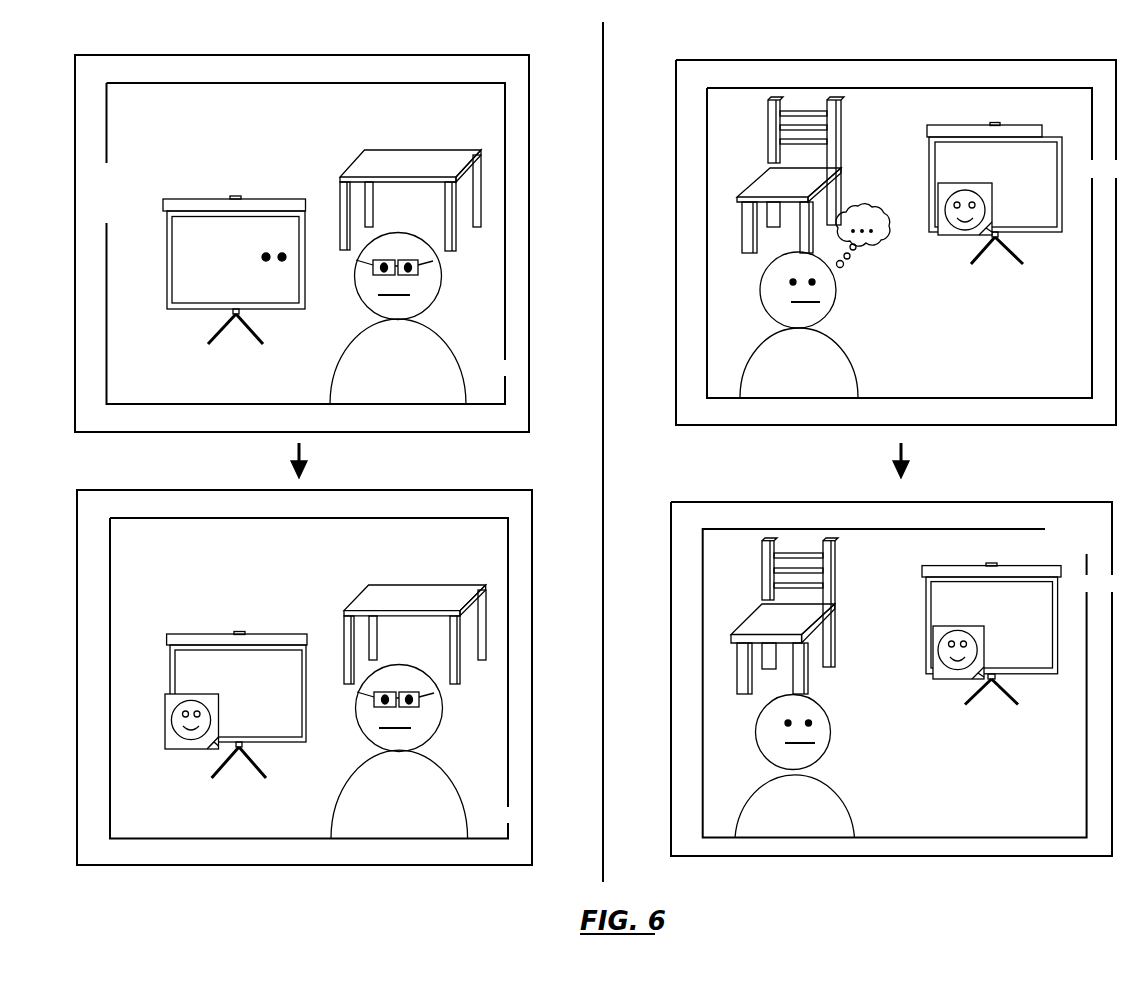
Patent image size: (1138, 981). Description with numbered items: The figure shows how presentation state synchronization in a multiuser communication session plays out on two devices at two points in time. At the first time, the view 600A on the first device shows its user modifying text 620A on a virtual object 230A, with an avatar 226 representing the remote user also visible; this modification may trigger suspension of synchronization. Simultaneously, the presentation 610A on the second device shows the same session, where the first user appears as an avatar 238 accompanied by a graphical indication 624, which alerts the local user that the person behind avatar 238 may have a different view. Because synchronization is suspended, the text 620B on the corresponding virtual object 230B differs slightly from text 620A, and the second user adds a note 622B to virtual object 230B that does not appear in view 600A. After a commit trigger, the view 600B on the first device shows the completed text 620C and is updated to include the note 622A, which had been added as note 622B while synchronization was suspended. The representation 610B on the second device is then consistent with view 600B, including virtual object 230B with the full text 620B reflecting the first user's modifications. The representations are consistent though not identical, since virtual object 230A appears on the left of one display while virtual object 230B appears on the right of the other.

The view of the multiuser communication session at a first time 600A is at (302, 54).
The view of the multiuser communication session at a second time 600B is at (305, 488).
The presentation of the multiuser communication session at a first time 610A is at (897, 59).
The representation of the multiuser communication session at a second time 610B is at (892, 501).
The virtual object 230A is at (178, 198).
The virtual object 230B is at (1045, 193).
The text 620A is at (180, 239).
The text 620B is at (1002, 153).
The completed text 620C is at (242, 667).
The note 622A is at (172, 753).
The note 622B is at (955, 237).
The avatar 226 is at (410, 338).
The avatar 238 is at (828, 378).
The graphical indication 624 is at (865, 205).